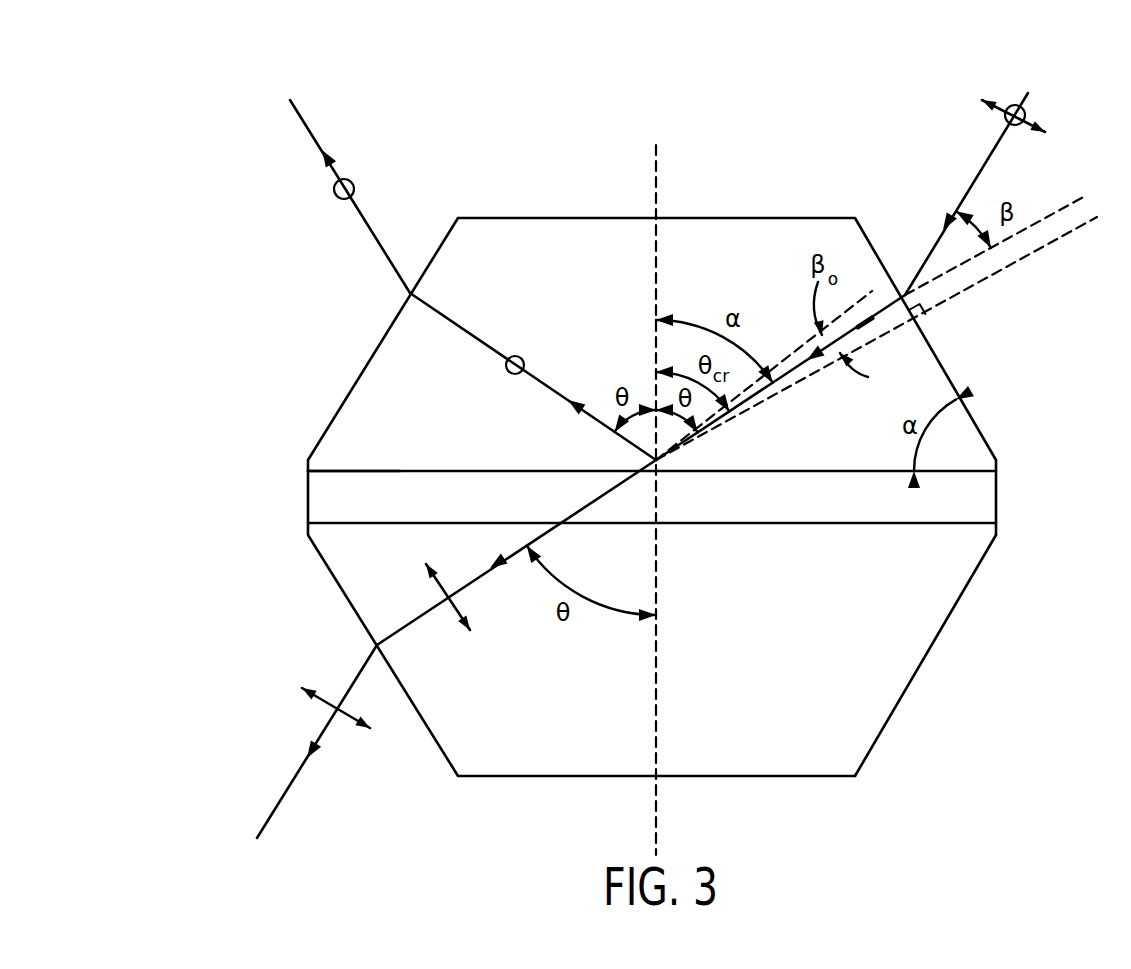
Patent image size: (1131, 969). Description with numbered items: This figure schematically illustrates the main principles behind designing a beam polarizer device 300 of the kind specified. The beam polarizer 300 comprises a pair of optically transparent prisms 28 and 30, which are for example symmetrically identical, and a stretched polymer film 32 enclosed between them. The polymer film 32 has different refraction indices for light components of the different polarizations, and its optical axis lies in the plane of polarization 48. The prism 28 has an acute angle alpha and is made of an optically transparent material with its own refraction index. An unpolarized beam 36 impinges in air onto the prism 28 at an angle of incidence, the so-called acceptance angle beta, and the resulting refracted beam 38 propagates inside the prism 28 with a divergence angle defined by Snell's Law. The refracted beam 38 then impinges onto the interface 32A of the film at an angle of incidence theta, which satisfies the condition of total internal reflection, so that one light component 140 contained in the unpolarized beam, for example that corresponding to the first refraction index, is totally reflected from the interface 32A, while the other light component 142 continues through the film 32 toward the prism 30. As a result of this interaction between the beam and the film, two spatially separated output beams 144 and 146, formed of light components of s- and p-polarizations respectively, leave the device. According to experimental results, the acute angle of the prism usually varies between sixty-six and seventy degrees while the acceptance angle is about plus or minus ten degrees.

The beam polarizer device 300 is at (178, 130).
The prism 28 is at (522, 228).
The prism 30 is at (895, 673).
The polymer film 32 is at (435, 478).
The interface 32A is at (328, 471).
The unpolarized beam 36 is at (973, 178).
The refracted beam 38 is at (811, 340).
The plane of polarization 48 is at (566, 303).
The totally reflected light component 140 is at (443, 319).
The transmitted light component 142 is at (422, 611).
The output beam 144 is at (298, 116).
The output beam 146 is at (287, 789).